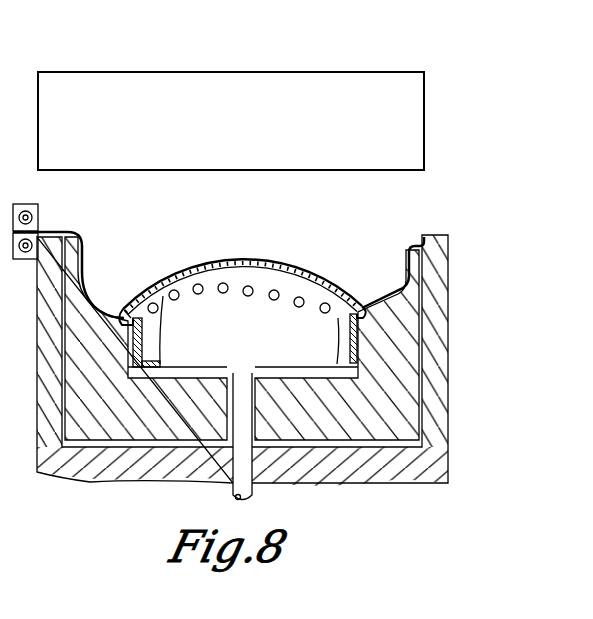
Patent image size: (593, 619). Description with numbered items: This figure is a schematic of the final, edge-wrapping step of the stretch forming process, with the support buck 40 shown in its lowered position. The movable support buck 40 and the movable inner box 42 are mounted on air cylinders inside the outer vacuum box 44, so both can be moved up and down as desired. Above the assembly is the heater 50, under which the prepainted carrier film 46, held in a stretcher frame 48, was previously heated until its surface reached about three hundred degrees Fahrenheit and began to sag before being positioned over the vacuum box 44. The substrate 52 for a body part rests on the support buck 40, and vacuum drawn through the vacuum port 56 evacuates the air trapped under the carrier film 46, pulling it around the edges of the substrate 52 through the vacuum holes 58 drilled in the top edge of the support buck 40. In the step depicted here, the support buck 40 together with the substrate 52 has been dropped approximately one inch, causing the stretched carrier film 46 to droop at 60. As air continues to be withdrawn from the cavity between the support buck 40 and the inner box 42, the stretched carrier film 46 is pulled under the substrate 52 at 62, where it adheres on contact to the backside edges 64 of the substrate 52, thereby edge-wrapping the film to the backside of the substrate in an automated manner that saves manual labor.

The support buck 40 is at (270, 318).
The inner box 42 is at (90, 418).
The outer vacuum box 44 is at (40, 322).
The prepainted carrier film 46 is at (244, 263).
The stretcher frame 48 is at (38, 213).
The heater 50 is at (308, 92).
The substrate 52 is at (317, 283).
The vacuum port 56 is at (241, 466).
The vacuum holes 58 is at (221, 283).
The droop 60 is at (140, 317).
The film pull-under location 62 is at (333, 314).
The backside edges 64 is at (135, 304).